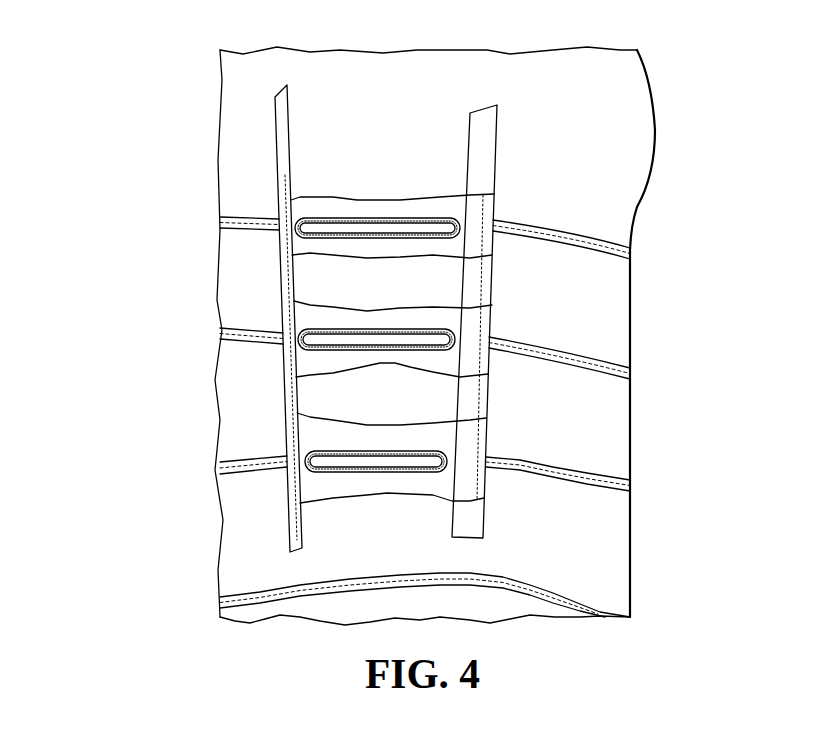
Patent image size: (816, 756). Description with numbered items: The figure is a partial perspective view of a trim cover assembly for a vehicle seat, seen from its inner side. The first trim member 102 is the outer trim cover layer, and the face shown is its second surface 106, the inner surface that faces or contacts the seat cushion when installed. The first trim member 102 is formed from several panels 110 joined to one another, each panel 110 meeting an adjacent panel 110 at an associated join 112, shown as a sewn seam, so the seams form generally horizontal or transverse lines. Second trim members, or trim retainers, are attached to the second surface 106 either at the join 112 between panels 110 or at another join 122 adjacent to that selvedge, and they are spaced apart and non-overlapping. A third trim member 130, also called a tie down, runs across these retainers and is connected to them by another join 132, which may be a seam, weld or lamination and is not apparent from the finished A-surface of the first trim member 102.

The first trim member 102 is at (143, 333).
The panel 110 is at (143, 333).
The second surface 106 is at (447, 88).
The join 112 is at (582, 207).
The join 122 is at (313, 283).
The third trim member 130 is at (288, 135).
The join 132 is at (480, 243).